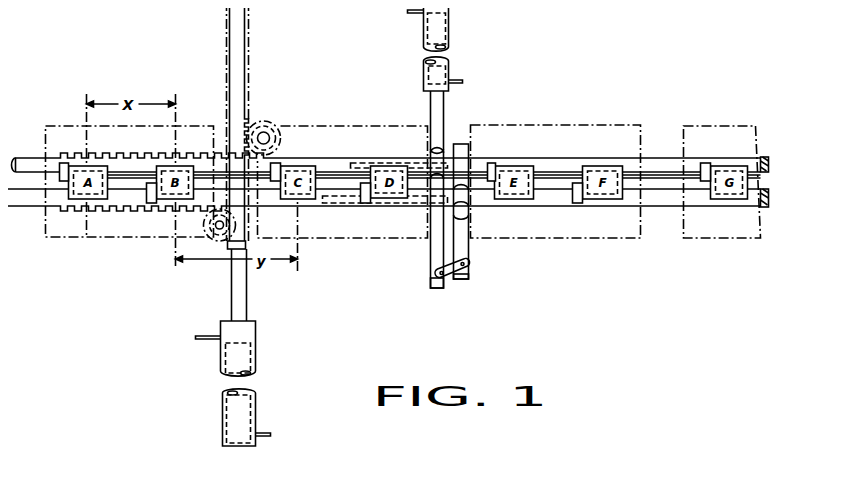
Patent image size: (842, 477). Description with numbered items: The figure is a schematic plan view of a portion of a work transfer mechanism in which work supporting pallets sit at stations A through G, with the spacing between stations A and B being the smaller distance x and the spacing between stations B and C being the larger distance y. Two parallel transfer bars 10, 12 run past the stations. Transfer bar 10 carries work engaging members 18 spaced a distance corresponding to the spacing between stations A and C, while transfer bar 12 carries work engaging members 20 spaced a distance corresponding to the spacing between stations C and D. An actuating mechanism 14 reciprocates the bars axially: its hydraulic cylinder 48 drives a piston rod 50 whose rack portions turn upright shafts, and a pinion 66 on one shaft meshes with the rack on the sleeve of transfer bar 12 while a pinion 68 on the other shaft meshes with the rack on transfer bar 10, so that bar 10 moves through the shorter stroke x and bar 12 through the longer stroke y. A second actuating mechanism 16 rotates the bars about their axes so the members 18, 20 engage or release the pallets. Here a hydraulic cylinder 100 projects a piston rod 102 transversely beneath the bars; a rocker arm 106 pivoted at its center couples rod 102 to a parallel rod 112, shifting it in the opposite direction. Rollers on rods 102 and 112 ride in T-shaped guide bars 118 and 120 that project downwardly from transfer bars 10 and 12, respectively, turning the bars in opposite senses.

The transfer bar 10 is at (28, 160).
The transfer bar 12 is at (22, 210).
The actuating mechanism 14 is at (263, 337).
The second actuating mechanism 16 is at (465, 76).
The work engaging members 18 is at (63, 161).
The work engaging members 20 is at (151, 203).
The hydraulic cylinder 48 is at (257, 400).
The piston rod 50 is at (236, 302).
The pinion 66 is at (216, 229).
The pinion 68 is at (270, 128).
The hydraulic cylinder 100 is at (450, 42).
The piston rod 102 is at (437, 122).
The rocker arm 106 is at (461, 279).
The rod 112 is at (461, 245).
The T-shaped guide bar 118 is at (365, 162).
The T-shaped guide bar 120 is at (400, 203).